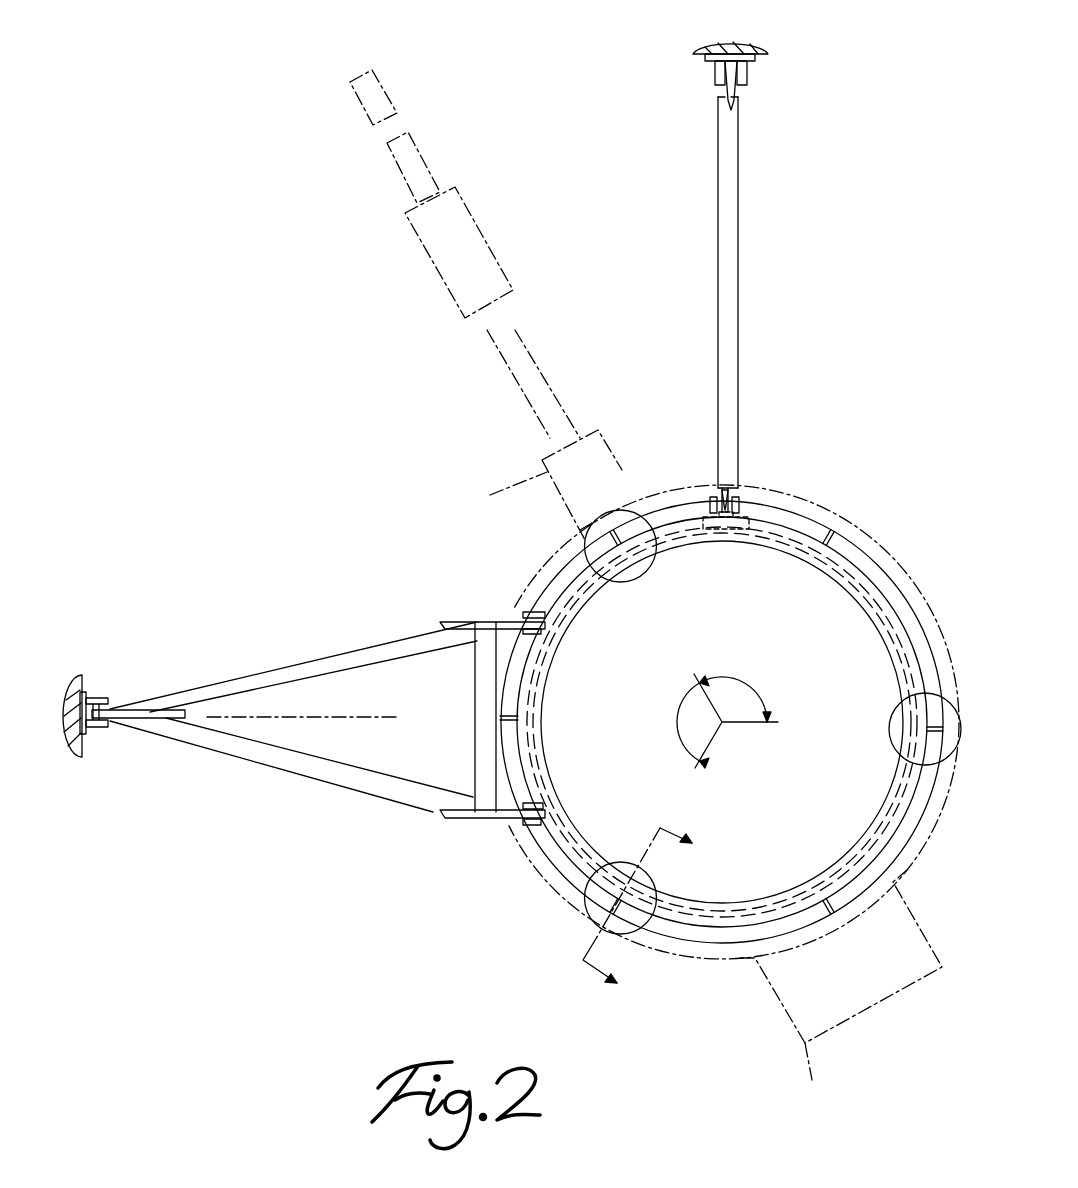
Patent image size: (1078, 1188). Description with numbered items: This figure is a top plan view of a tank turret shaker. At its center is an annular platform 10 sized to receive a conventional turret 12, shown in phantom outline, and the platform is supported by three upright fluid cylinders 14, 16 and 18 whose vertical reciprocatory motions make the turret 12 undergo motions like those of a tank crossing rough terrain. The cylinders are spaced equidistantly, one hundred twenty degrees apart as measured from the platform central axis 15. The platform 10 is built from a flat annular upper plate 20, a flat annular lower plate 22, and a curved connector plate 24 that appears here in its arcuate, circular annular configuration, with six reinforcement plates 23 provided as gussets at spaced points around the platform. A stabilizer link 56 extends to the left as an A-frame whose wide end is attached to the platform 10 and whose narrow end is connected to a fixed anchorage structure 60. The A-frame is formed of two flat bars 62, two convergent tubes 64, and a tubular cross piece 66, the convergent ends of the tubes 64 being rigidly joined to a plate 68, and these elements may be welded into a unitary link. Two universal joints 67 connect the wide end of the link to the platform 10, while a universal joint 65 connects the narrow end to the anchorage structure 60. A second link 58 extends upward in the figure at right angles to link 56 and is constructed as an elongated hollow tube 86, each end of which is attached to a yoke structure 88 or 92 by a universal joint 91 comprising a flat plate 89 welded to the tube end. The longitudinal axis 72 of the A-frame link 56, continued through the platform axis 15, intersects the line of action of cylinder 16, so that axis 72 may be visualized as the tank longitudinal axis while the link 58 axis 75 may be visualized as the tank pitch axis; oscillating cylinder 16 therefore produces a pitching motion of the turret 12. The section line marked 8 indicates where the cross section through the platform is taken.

The annular platform 10 is at (900, 655).
The turret 12 is at (825, 1100).
The fluid cylinder 14 is at (600, 918).
The platform central axis 15 is at (725, 726).
The fluid cylinder 16 is at (889, 727).
The fluid cylinder 18 is at (627, 562).
The upper plate 20 is at (545, 676).
The lower plate 22 is at (858, 548).
The reinforcement plates 23 is at (618, 530).
The connector plate 24 is at (850, 565).
The stabilizer link 56 is at (320, 768).
The link 58 is at (738, 237).
The anchorage structure 60 is at (90, 692).
The flat bars 62 is at (467, 620).
The convergent tubes 64 is at (306, 660).
The universal joint 65 is at (90, 736).
The tubular cross piece 66 is at (478, 690).
The universal joints 67 is at (535, 612).
The plate 68 is at (158, 712).
The longitudinal axis 72 is at (303, 717).
The link axis 75 is at (720, 307).
The hollow tube 86 is at (738, 360).
The yoke structure 88 is at (738, 42).
The flat plate 89 is at (720, 85).
The universal joint 91 is at (748, 72).
The yoke structure 92 is at (728, 531).
The section line 8- 8 is at (650, 926).